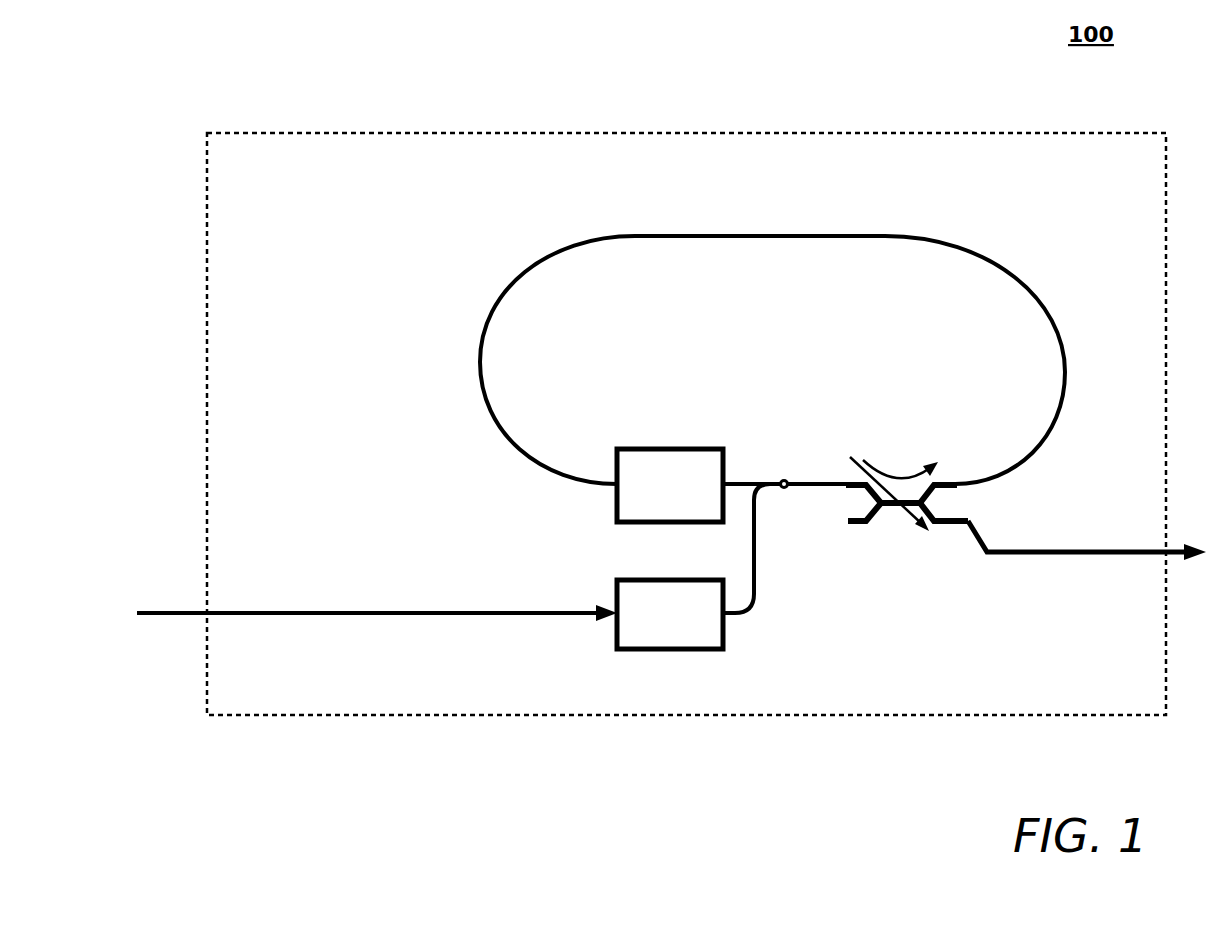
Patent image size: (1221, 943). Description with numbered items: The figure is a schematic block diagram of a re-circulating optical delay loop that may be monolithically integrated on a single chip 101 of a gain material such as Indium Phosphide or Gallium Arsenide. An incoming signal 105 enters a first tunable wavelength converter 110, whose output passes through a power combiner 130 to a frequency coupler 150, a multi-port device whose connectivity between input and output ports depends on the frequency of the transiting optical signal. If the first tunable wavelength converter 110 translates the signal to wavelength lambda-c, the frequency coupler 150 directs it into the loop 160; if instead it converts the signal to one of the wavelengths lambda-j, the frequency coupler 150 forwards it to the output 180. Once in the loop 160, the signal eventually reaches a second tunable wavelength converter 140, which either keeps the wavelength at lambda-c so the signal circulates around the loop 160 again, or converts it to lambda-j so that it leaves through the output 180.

The single chip 101 is at (583, 716).
The incoming signal 105 is at (192, 617).
The first tunable wavelength converter 110 is at (617, 580).
The power combiner 130 is at (784, 480).
The second tunable wavelength converter 140 is at (617, 449).
The frequency coupler 150 is at (846, 523).
The loop 160 is at (772, 236).
The output 180 is at (1093, 551).